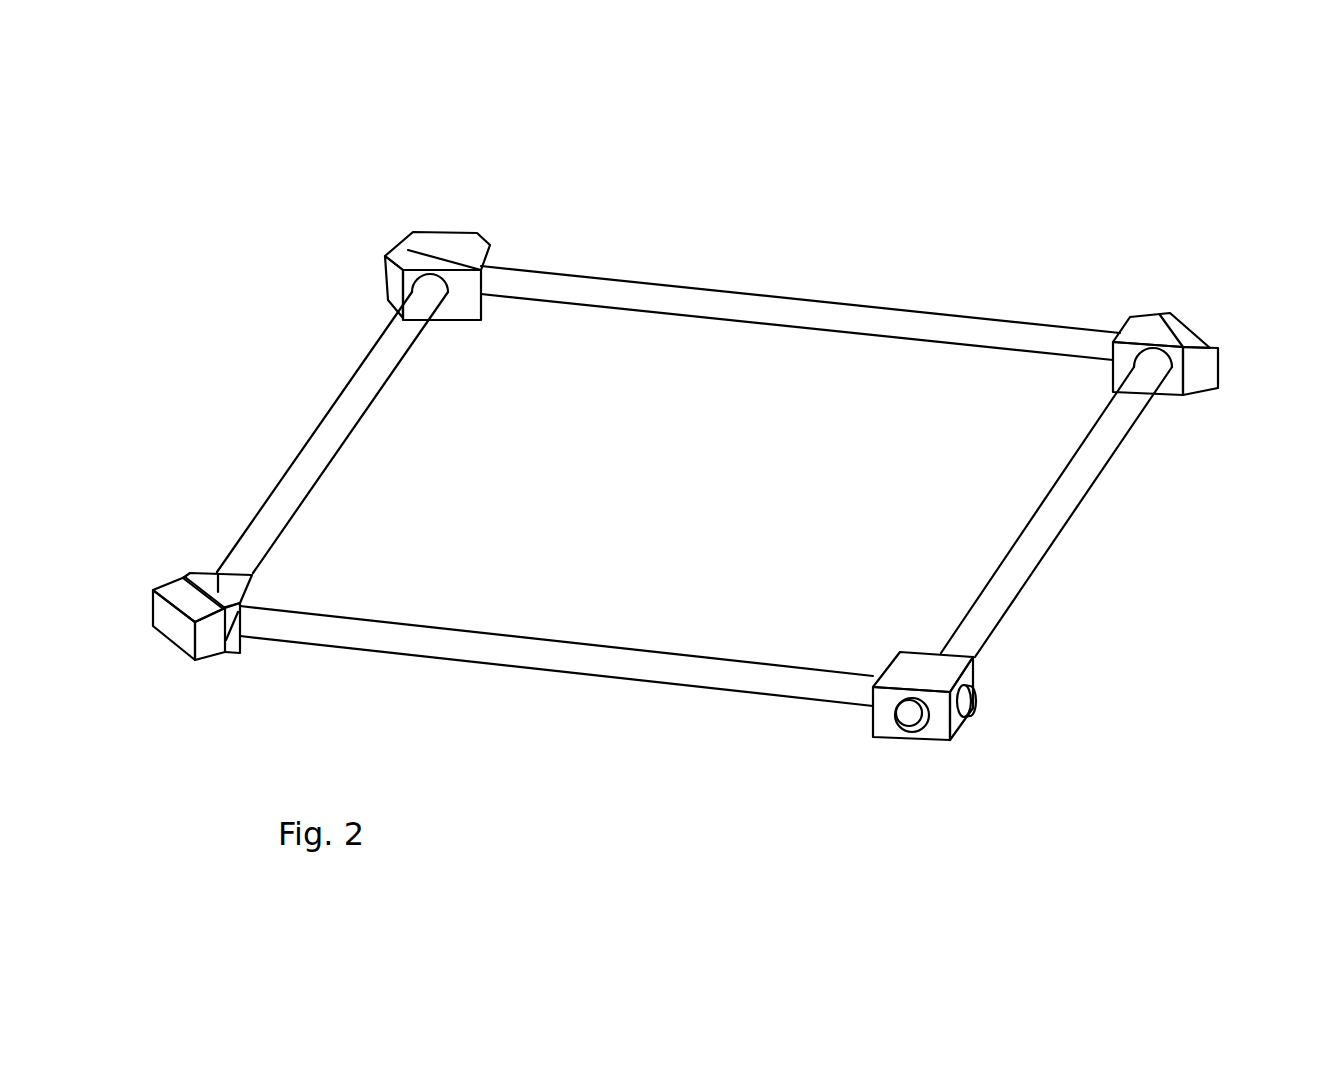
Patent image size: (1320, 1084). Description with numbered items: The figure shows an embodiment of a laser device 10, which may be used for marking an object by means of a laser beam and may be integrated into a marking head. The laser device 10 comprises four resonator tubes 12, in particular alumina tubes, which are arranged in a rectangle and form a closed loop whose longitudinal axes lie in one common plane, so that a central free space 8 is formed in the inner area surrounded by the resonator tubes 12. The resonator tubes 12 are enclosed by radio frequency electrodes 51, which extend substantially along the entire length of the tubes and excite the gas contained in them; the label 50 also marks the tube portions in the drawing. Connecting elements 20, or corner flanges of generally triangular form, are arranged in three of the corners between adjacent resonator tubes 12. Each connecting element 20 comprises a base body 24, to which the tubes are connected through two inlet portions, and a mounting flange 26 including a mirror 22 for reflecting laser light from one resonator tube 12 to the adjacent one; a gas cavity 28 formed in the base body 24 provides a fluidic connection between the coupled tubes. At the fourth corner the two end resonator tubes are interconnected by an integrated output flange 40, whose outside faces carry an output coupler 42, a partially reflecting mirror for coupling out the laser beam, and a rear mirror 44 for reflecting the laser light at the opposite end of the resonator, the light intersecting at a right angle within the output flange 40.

The central free space 8 is at (688, 501).
The laser device 10 is at (272, 162).
The resonator tubes 12 is at (928, 330).
The connecting elements 20 is at (421, 192).
The mirror 22 is at (385, 256).
The base body 24 is at (495, 240).
The mounting flange 26 is at (450, 232).
The gas cavity 28 is at (503, 302).
The integrated output flange 40 is at (1013, 781).
The output coupler 42 is at (977, 702).
The rear mirror 44 is at (918, 717).
The tube inner portion 50 is at (812, 308).
The radio frequency electrodes 51 is at (708, 300).